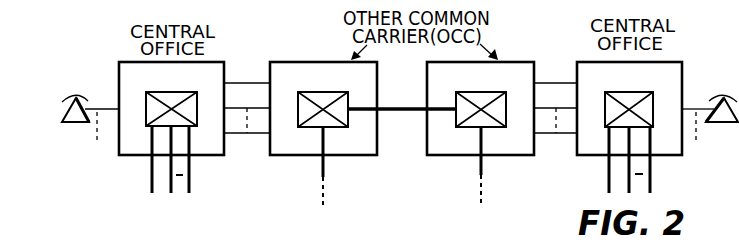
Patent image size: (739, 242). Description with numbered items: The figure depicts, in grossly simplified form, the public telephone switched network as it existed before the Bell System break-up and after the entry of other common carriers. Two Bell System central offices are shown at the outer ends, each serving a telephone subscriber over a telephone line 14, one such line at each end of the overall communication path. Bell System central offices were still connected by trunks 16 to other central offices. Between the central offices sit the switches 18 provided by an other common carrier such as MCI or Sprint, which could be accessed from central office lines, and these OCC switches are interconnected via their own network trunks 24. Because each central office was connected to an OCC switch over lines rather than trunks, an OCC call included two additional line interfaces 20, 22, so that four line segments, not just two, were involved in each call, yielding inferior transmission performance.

The lines 14 is at (113, 108).
The trunks 16 is at (151, 175).
The switches 18 is at (278, 62).
The line interface 20 is at (252, 146).
The line interface 22 is at (552, 147).
The network trunks 24 is at (325, 171).